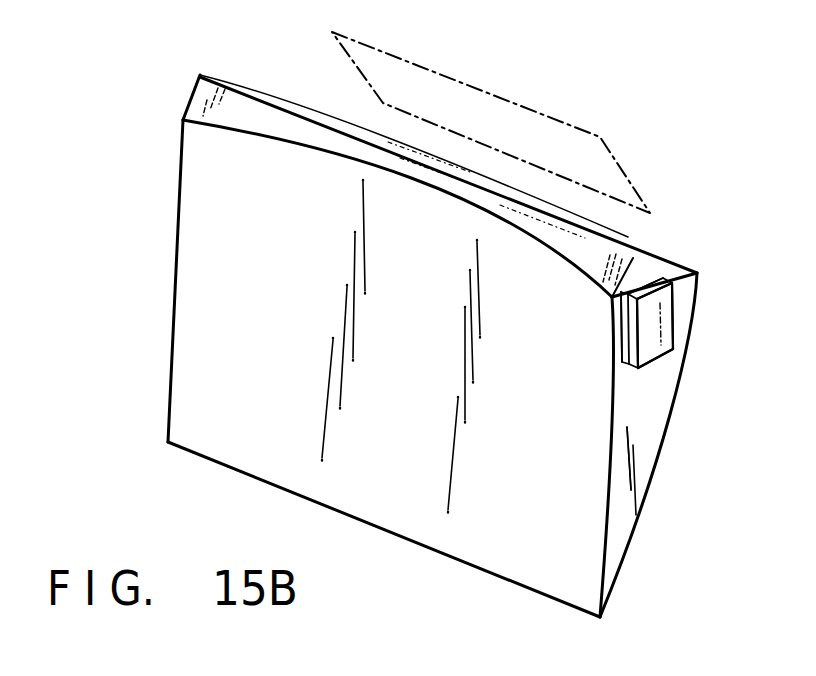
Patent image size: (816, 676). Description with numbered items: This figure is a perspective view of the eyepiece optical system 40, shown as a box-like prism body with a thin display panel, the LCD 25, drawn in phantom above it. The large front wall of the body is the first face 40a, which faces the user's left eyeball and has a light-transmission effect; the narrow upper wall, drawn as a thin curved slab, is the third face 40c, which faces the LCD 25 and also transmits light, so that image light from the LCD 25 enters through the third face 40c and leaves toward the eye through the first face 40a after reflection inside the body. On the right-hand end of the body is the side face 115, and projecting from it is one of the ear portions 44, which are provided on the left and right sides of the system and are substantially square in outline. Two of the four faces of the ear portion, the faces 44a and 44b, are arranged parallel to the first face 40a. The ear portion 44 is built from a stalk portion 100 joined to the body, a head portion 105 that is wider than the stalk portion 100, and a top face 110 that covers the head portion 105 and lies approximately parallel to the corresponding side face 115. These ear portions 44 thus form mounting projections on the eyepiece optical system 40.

The LCD 25 is at (497, 98).
The eyepiece optical system 40 is at (176, 322).
The first face 40a is at (218, 403).
The third face 40c is at (301, 108).
The ear portion 44 is at (666, 273).
The face of ear portion 44a is at (616, 346).
The face of ear portion 44b is at (677, 316).
The stalk portion 100 is at (641, 291).
The head portion 105 is at (623, 322).
The top face 110 is at (656, 330).
The side face 115 is at (642, 441).